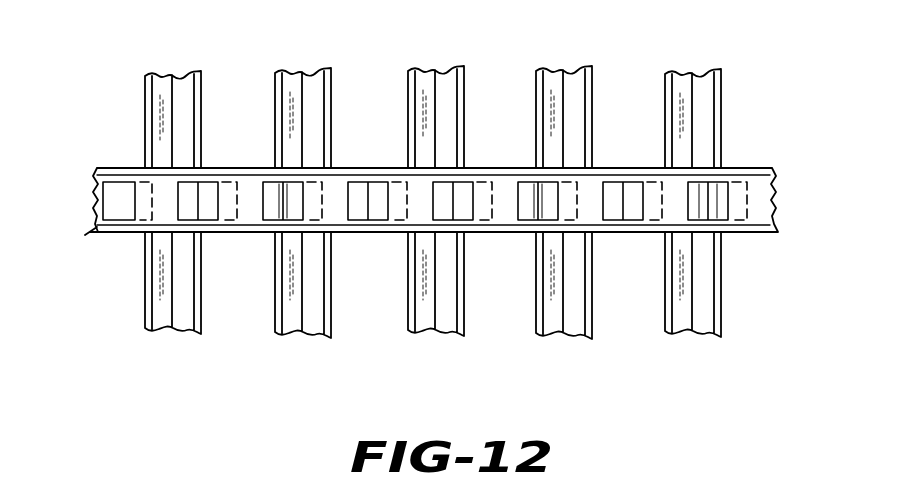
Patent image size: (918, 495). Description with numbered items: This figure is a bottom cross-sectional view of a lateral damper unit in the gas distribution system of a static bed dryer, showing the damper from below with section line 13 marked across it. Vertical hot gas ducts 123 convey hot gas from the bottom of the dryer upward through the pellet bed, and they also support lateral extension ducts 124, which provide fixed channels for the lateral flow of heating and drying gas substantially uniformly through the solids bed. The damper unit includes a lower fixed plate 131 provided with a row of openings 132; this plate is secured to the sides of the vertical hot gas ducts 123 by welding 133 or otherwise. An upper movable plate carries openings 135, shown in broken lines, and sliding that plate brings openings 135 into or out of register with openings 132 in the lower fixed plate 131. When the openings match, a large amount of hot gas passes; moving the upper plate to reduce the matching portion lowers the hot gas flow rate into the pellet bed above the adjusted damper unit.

The lateral extension ducts 124 is at (332, 305).
The lower fixed plate 131 is at (762, 232).
The vertical hot gas ducts 123 is at (630, 232).
The welding 133 is at (350, 165).
The openings 132 is at (643, 195).
The openings 135 is at (229, 197).
The section line 13- 13 is at (845, 212).